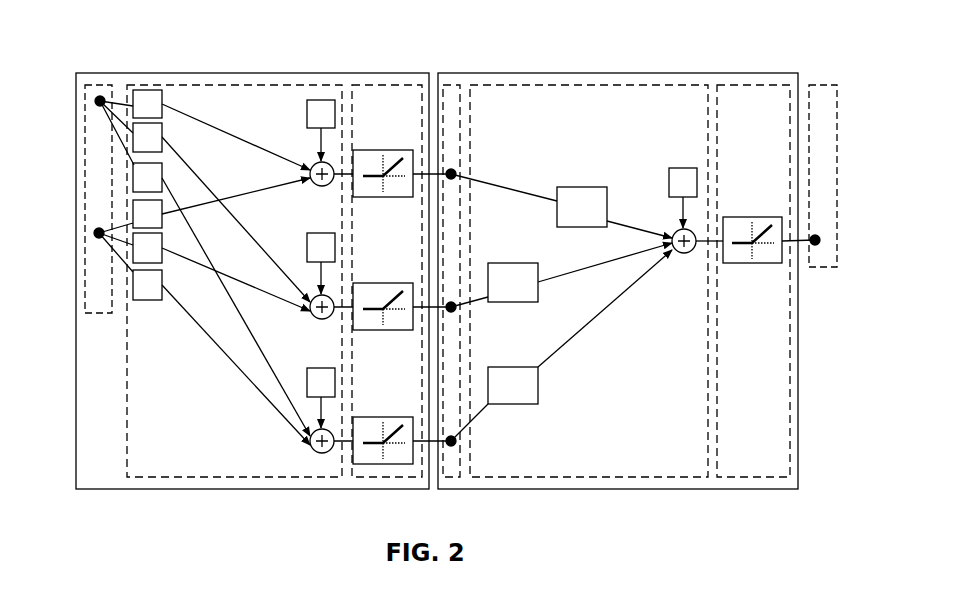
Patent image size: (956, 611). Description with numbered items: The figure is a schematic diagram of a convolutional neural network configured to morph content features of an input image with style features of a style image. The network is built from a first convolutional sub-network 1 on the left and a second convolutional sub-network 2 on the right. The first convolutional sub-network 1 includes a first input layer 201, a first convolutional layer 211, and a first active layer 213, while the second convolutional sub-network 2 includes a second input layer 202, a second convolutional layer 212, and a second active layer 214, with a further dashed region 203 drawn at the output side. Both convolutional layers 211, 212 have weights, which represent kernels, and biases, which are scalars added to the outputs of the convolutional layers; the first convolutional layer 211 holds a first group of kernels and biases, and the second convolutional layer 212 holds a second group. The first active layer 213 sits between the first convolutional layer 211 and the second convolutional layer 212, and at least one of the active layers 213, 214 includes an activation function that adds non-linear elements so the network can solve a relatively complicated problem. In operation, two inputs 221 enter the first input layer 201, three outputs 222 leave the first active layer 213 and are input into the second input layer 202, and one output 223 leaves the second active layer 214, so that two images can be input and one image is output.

The first convolutional sub-network 1 is at (75, 362).
The second convolutional sub-network 2 is at (799, 358).
The first input layer 201 is at (98, 85).
The second input layer 202 is at (460, 84).
The output layer 203 is at (825, 85).
The first convolutional layer 211 is at (230, 85).
The second convolutional layer 212 is at (578, 83).
The first active layer 213 is at (397, 85).
The second active layer 214 is at (758, 85).
The inputs 221 is at (95, 233).
The outputs 222 is at (452, 172).
The output 223 is at (834, 240).